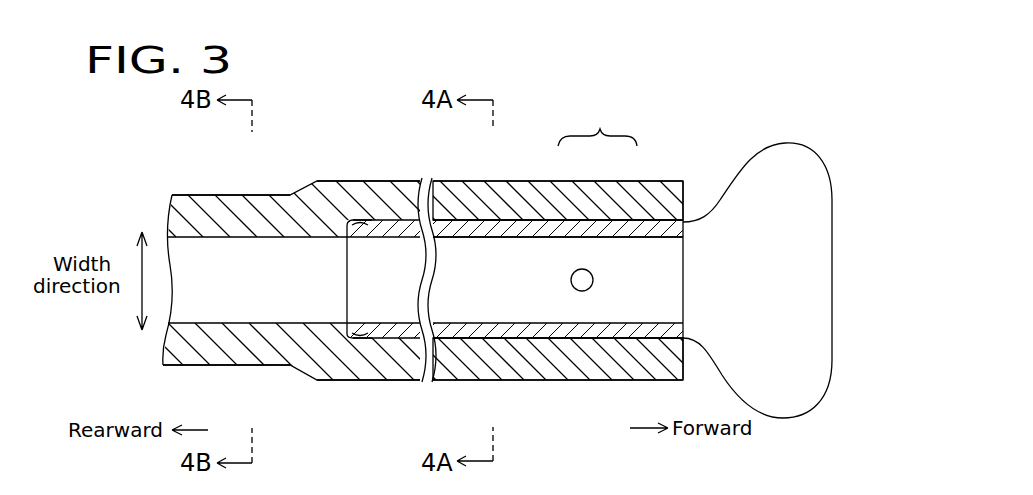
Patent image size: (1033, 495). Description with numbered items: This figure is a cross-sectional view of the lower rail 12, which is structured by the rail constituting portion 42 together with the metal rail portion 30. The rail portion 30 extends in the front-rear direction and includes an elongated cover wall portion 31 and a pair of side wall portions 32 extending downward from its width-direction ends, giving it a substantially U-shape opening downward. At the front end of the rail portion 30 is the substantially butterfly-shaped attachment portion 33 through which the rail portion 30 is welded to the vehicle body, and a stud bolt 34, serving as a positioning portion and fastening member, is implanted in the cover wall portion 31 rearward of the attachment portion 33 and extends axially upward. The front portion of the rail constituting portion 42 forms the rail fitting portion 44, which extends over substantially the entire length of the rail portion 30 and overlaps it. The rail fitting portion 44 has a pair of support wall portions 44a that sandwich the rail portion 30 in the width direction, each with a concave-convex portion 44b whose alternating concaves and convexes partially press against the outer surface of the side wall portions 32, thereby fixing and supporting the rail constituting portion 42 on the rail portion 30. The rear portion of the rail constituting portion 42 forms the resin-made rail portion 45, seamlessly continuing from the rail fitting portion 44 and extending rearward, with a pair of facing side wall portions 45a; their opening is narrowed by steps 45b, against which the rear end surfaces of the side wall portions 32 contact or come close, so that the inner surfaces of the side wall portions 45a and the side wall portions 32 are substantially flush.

The lower rail 12 is at (597, 124).
The rail portion 30 is at (615, 220).
The cover wall portion 31 is at (347, 279).
The side wall portions 32 is at (524, 228).
The attachment portion 33 is at (778, 147).
The stud bolt 34 is at (593, 280).
The rail constituting portion 42 is at (575, 186).
The rail fitting portion 44 is at (461, 186).
The support wall portions 44a is at (398, 186).
The concave-convex portion 44b is at (478, 228).
The resin-made rail portion 45 is at (190, 200).
The side wall portions 45a is at (250, 200).
The steps 45b is at (360, 214).